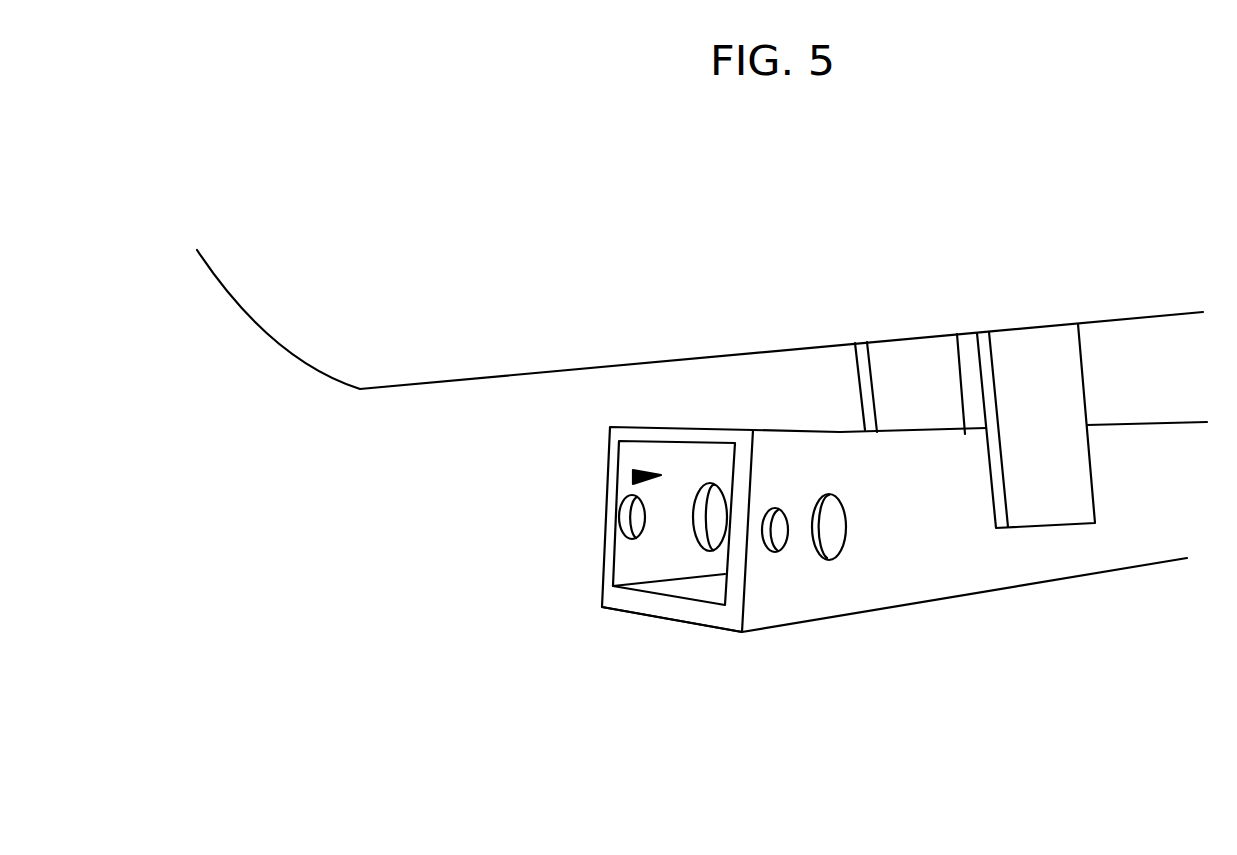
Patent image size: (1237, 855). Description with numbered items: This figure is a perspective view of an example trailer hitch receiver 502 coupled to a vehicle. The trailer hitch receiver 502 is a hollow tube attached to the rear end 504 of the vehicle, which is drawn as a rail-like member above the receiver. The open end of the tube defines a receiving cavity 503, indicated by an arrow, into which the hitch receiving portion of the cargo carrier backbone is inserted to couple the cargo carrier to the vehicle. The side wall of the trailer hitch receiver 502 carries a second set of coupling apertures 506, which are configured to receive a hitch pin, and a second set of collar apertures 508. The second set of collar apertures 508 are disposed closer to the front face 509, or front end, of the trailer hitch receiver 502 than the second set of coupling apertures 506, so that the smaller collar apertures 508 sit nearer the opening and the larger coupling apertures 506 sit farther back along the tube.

The trailer hitch receiver 502 is at (592, 683).
The receiving cavity 503 is at (633, 477).
The rear end 504 is at (357, 303).
The second set of coupling apertures 506 is at (837, 533).
The second set of collar apertures 508 is at (623, 518).
The front face 509 is at (697, 612).